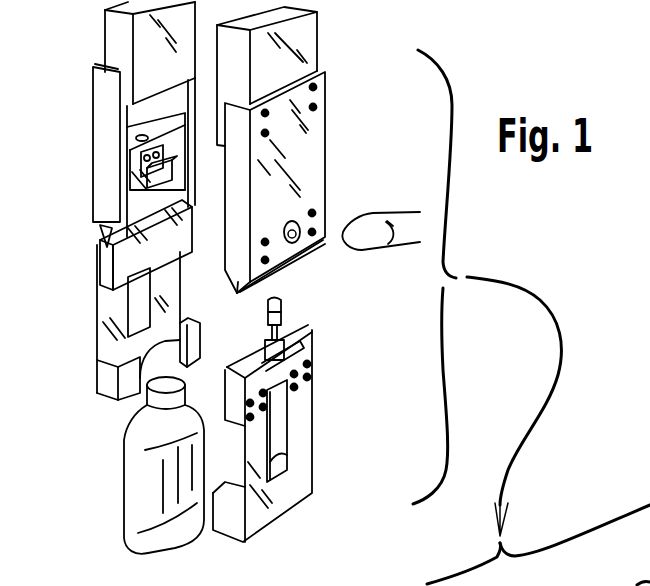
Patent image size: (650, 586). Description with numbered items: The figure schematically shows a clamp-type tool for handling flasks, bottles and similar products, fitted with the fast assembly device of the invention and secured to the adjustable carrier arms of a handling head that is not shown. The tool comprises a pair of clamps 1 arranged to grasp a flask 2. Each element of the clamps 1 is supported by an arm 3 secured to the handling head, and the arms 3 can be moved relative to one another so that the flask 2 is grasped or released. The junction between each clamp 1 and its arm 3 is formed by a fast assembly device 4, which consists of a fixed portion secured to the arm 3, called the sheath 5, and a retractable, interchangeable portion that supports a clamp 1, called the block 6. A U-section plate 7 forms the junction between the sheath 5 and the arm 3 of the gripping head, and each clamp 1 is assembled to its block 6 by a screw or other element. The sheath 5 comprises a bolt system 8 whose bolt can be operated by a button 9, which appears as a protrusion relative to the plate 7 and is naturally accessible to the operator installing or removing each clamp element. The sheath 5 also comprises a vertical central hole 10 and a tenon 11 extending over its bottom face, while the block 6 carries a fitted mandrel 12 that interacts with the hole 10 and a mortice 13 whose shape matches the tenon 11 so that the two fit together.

The clamp 1 is at (107, 382).
The flask 2 is at (145, 482).
The arm 3 is at (122, 38).
The fast assembly device 4 is at (50, 128).
The sheath 5 is at (162, 127).
The block 6 is at (120, 268).
The U-section plate 7 is at (110, 215).
The bolt system 8 is at (127, 183).
The button 9 is at (293, 222).
The vertical central hole 10 is at (142, 136).
The tenon 11 is at (243, 290).
The mandrel 12 is at (284, 305).
The mortice 13 is at (300, 332).